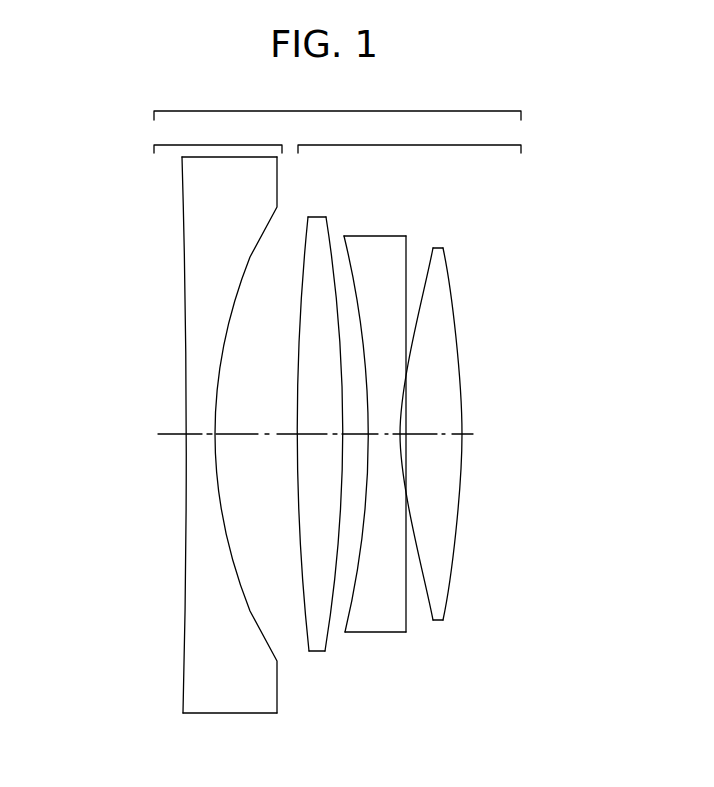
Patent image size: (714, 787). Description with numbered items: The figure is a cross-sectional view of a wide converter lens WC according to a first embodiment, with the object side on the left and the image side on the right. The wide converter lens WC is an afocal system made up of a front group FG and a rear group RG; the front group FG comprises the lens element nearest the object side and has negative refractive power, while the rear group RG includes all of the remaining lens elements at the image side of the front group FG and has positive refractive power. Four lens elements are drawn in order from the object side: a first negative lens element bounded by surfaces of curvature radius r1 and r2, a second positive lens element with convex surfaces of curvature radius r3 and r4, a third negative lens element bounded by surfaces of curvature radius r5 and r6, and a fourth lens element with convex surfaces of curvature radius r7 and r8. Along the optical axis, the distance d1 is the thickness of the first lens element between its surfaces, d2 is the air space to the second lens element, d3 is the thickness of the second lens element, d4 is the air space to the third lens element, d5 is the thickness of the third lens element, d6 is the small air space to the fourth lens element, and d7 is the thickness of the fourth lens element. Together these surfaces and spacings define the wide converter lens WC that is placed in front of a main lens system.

The wide converter lens WC is at (337, 100).
The front group FG is at (218, 135).
The rear group RG is at (409, 135).
The curvature radius of the first surface r1 is at (183, 675).
The curvature radius of the second surface r2 is at (252, 615).
The curvature radius of the third surface r3 is at (303, 558).
The curvature radius of the fourth surface r4 is at (328, 620).
The curvature radius of the fifth surface r5 is at (363, 530).
The curvature radius of the sixth surface r6 is at (406, 592).
The curvature radius of the seventh surface r7 is at (430, 616).
The curvature radius of the eighth surface r8 is at (455, 560).
The distance between the first and second surfaces d1 is at (200, 434).
The distance between the second and third surfaces d2 is at (257, 434).
The distance between the third and fourth surfaces d3 is at (325, 434).
The distance between the fourth and fifth surfaces d4 is at (360, 434).
The distance between the fifth and sixth surfaces d5 is at (387, 434).
The distance between the sixth and seventh surfaces d6 is at (404, 434).
The distance between the seventh and eighth surfaces d7 is at (433, 434).